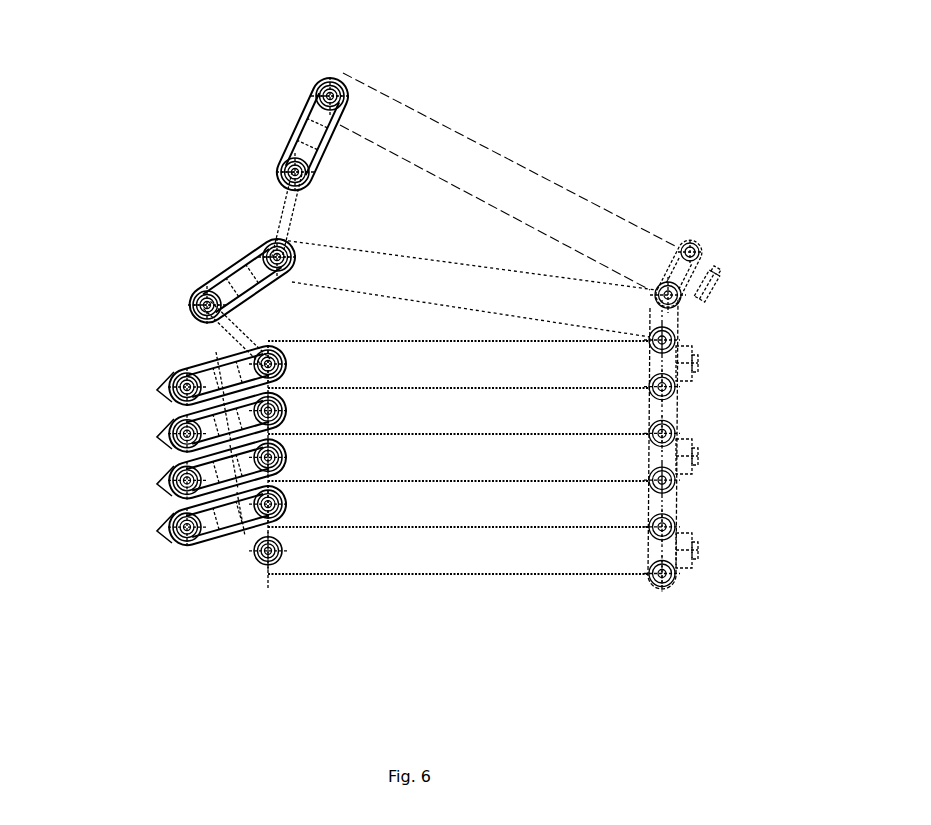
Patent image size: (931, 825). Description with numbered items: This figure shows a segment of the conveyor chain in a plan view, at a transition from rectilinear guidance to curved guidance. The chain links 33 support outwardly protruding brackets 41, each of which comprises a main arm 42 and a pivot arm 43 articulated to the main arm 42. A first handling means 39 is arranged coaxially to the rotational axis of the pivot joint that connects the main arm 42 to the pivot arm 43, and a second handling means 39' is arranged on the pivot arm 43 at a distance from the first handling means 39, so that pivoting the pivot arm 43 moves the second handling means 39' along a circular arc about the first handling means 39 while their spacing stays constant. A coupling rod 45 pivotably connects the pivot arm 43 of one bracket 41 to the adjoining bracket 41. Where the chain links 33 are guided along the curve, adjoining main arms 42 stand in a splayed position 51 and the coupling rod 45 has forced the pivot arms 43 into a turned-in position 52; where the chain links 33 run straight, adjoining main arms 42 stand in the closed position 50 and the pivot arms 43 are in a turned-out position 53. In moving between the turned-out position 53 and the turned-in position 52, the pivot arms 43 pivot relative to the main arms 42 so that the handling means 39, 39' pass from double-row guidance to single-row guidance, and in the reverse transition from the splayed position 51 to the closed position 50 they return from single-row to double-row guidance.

The chain link 33 is at (700, 275).
The first handling means 39 is at (392, 299).
The second handling means 39' is at (251, 207).
The bracket 41 is at (645, 150).
The main arm 42 is at (538, 183).
The pivot arm 43 is at (290, 133).
The coupling rod 45 is at (285, 216).
The closed position 50 is at (322, 632).
The splayed position 51 is at (492, 68).
The turned-in position 52 is at (212, 120).
The turned-out position 53 is at (106, 443).